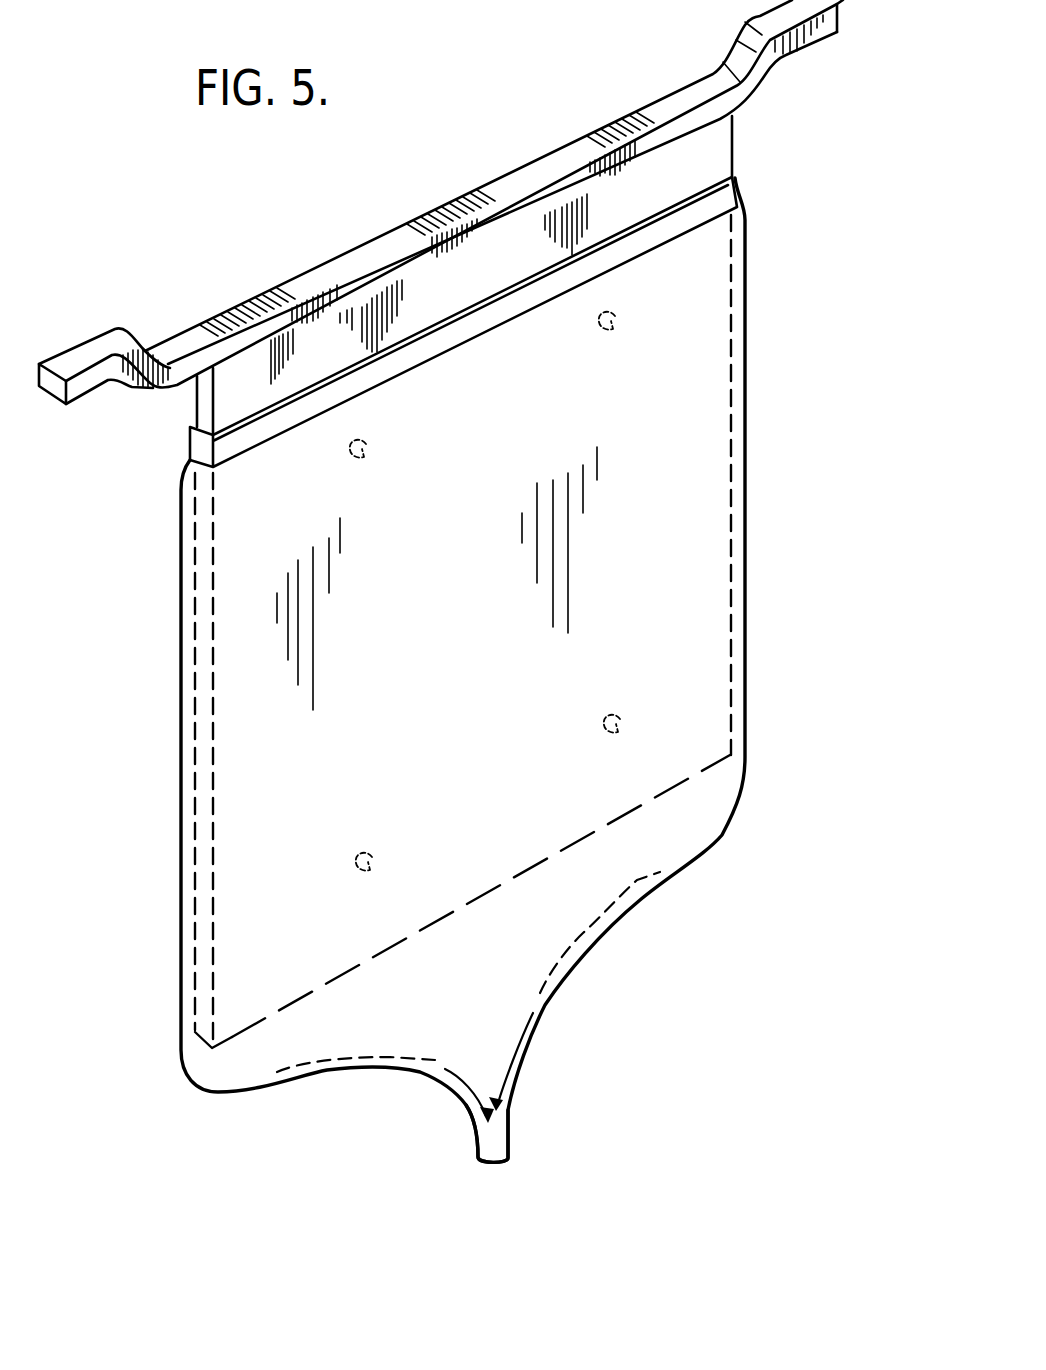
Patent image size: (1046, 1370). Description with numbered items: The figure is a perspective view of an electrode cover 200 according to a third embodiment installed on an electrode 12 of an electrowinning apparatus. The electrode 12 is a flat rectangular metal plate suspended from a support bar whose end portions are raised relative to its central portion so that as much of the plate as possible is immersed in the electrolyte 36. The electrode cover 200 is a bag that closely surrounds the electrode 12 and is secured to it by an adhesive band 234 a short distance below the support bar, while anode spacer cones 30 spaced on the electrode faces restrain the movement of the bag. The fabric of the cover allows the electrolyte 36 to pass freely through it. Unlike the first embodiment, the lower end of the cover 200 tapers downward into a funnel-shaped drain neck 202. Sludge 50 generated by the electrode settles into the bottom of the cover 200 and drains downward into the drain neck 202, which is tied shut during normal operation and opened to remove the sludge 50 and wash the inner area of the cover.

The electrode 12 is at (732, 140).
The adhesive band 234 is at (737, 185).
The electrode cover 200 is at (745, 448).
The anode spacer cones 30 is at (605, 332).
The sludge 50 is at (323, 1063).
The drain neck 202 is at (512, 1112).
The electrolyte 36 is at (540, 644).